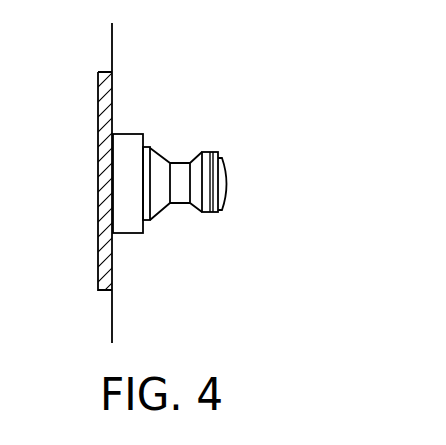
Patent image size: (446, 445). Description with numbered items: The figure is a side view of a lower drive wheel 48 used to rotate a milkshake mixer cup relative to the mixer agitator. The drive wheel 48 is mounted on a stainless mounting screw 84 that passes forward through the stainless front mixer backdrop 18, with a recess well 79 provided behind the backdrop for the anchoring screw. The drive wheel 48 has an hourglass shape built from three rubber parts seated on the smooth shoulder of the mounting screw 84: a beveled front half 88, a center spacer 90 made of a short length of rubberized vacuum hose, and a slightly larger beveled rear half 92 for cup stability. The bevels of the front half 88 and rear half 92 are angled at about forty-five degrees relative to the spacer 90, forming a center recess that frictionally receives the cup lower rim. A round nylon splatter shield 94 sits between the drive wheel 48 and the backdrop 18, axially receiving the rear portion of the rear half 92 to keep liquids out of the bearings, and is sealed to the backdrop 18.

The lower drive wheel 48 is at (308, 52).
The recess well 79 is at (97, 184).
The front mixer backdrop 18 is at (113, 306).
The splatter shield 94 is at (128, 141).
The beveled rear half 92 is at (158, 202).
The spacer 90 is at (180, 205).
The beveled front half 88 is at (208, 206).
The mounting screw 84 is at (221, 166).